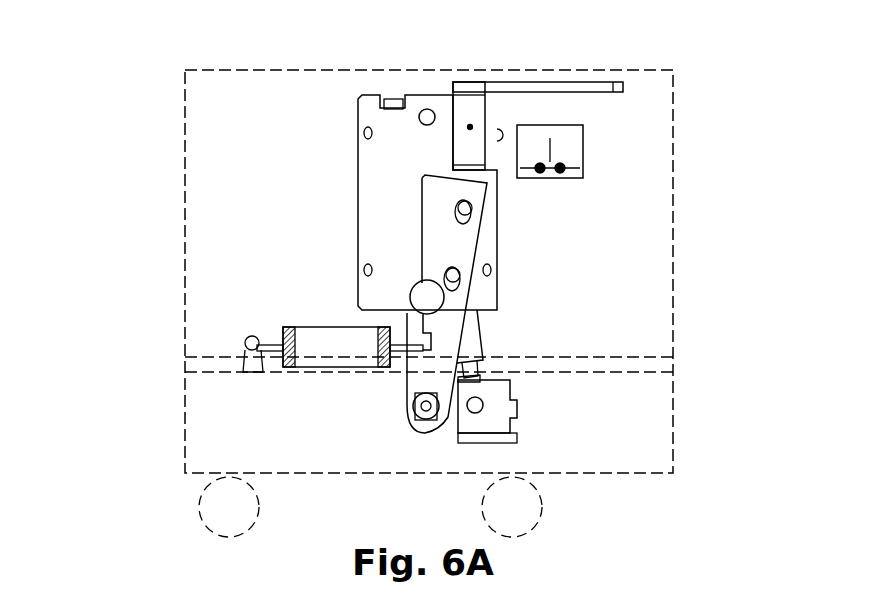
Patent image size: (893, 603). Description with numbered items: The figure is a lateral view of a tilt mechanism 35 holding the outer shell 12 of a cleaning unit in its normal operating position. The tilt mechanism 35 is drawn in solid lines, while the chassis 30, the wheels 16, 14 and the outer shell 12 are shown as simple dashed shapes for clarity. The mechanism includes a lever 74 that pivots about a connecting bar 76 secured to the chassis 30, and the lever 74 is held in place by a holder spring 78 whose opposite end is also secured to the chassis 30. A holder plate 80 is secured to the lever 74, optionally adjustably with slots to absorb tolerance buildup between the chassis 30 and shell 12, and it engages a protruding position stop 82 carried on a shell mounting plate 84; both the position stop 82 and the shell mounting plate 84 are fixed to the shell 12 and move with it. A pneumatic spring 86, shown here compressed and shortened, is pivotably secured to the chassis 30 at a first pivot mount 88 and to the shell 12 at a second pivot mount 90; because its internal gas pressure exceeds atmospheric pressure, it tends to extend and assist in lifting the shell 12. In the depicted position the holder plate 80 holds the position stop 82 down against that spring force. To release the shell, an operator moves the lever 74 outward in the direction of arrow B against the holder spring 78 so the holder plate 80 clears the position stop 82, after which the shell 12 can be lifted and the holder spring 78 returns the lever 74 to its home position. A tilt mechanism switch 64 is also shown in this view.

The outer shell 12 is at (200, 101).
The chassis 30 is at (200, 436).
The wheel 16 is at (217, 520).
The wheel 14 is at (500, 520).
The tilt mechanism 35 is at (147, 237).
The shell mounting plate 84 is at (360, 172).
The lever 74 is at (543, 82).
The second pivot mount 90 is at (427, 108).
The arrow B is at (645, 95).
The tilt mechanism switch 64 is at (583, 152).
The holder plate 80 is at (422, 222).
The position stop 82 is at (410, 297).
The connecting bar 76 is at (425, 412).
The holder spring 78 is at (303, 335).
The pneumatic spring 86 is at (470, 348).
The first pivot mount 88 is at (485, 404).